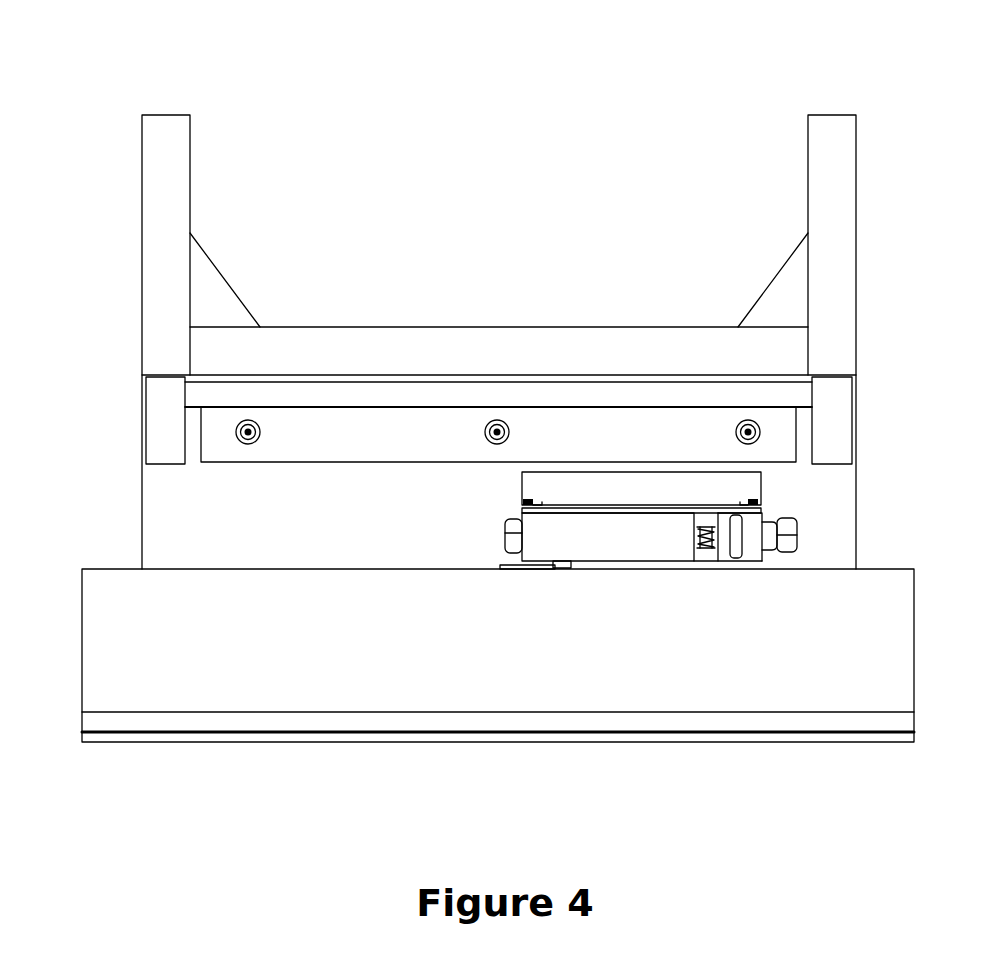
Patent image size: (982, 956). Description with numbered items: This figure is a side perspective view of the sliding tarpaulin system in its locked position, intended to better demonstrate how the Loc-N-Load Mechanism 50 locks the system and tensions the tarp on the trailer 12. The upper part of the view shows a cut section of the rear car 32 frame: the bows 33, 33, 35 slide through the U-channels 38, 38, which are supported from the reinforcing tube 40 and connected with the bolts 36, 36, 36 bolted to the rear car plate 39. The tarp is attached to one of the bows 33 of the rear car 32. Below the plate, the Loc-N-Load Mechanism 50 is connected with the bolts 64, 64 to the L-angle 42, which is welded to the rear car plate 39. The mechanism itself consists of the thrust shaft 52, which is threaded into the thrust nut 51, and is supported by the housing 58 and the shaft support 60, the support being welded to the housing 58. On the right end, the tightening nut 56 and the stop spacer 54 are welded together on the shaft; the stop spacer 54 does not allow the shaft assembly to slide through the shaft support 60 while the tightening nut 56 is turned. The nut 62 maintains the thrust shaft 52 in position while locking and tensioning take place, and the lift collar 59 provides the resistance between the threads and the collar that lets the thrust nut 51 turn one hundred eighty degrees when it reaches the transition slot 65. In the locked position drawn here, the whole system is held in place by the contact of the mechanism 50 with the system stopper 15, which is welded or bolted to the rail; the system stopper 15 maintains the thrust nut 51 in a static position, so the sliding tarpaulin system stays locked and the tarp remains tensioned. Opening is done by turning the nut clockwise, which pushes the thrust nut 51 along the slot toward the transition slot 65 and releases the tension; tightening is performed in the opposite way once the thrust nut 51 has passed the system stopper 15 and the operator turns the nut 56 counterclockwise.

The trailer 12 is at (855, 633).
The system stopper 15 is at (506, 567).
The rear car 32 is at (527, 283).
The bow 33 is at (160, 190).
The bow 35 is at (393, 353).
The bolt 36 is at (248, 432).
The U-channel 38 is at (160, 362).
The rear car plate 39 is at (164, 485).
The reinforcing tube 40 is at (240, 397).
The L-angle 42 is at (586, 490).
The Loc-N-Load Mechanism 50 is at (627, 580).
The thrust nut 51 is at (600, 538).
The thrust shaft 52 is at (705, 562).
The stop spacer 54 is at (763, 537).
The tightening nut 56 is at (785, 537).
The housing 58 is at (562, 563).
The lift collar 59 is at (723, 562).
The shaft support 60 is at (752, 535).
The nut 62 is at (510, 539).
The bolt 64 is at (528, 500).
The transition slot 65 is at (698, 560).